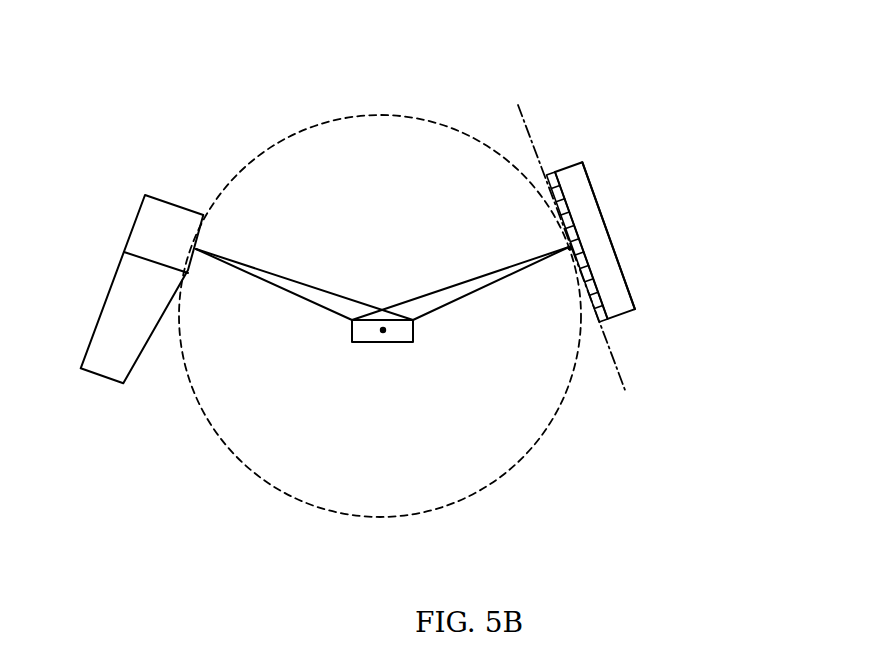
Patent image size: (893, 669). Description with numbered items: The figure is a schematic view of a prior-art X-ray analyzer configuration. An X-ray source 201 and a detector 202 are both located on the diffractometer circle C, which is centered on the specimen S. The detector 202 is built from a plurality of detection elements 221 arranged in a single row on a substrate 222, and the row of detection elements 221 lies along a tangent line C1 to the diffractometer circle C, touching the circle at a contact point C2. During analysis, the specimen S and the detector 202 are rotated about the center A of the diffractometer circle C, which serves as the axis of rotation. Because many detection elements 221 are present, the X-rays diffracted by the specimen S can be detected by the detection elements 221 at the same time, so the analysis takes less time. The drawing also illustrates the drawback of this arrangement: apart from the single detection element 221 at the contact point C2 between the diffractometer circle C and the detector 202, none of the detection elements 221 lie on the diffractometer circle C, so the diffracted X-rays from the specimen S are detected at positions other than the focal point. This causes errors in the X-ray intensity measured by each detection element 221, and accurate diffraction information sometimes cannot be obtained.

The X-ray source 201 is at (167, 203).
The detector 202 is at (625, 197).
The detection elements 221 is at (550, 172).
The substrate 222 is at (625, 280).
The diffractometer circle C is at (325, 123).
The tangent line C1 is at (518, 102).
The contact point C2 is at (570, 248).
The center A is at (383, 330).
The specimen S is at (405, 343).